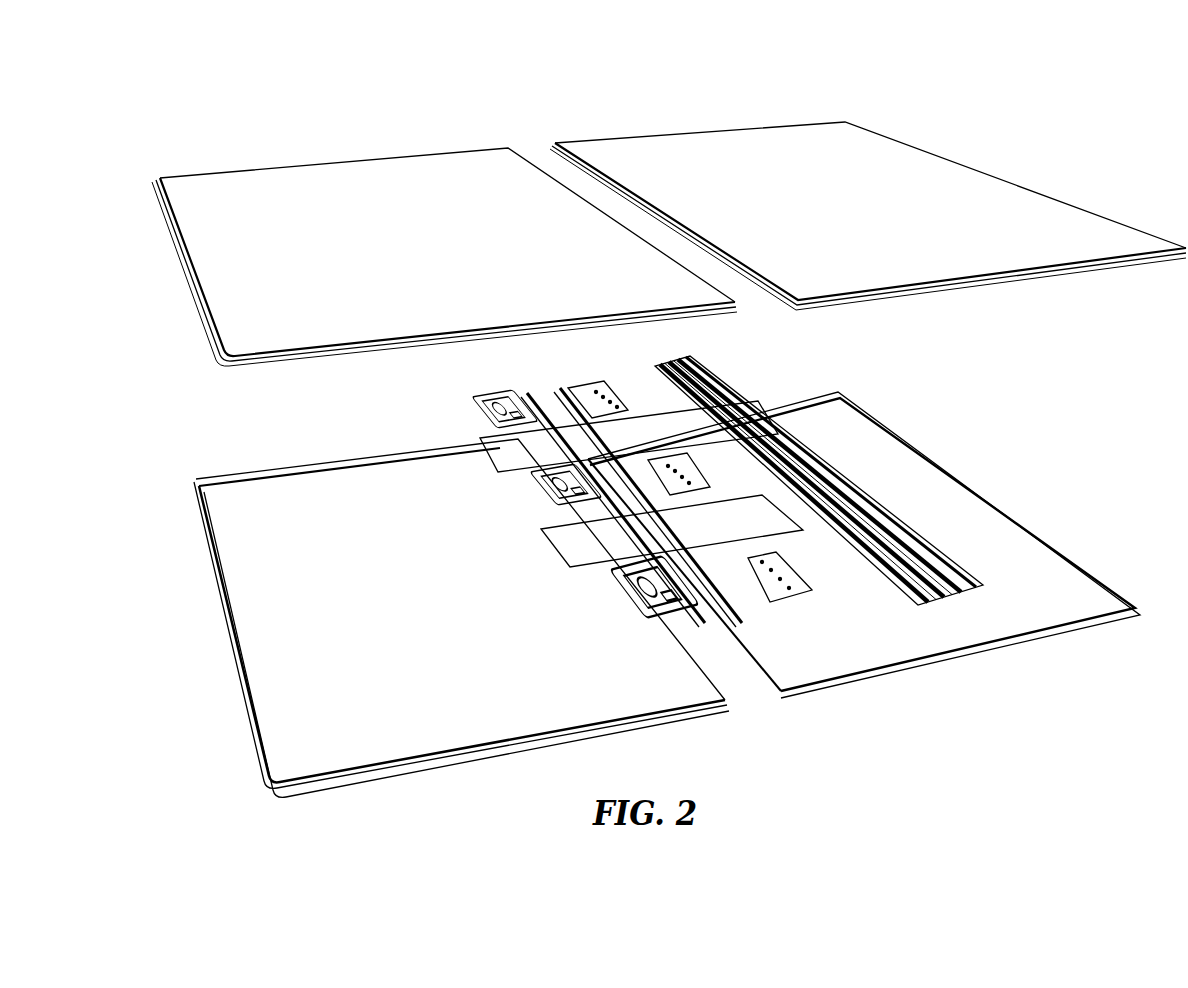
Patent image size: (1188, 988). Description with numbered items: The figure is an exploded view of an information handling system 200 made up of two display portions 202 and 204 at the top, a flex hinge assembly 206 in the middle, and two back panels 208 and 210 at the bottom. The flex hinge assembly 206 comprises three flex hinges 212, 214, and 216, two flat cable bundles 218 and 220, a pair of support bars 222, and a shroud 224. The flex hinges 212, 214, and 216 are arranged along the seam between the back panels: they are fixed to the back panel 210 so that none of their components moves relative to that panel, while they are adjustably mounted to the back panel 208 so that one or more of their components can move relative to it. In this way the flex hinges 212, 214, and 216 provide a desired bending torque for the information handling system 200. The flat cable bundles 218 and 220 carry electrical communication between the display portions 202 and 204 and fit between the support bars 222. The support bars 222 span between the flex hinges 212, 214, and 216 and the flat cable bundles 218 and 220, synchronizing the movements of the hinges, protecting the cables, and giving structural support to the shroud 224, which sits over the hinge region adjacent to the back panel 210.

The information handling system 200 is at (930, 85).
The display portion 202 is at (333, 165).
The display portion 204 is at (708, 135).
The flex hinge assembly 206 is at (468, 375).
The back panel 208 is at (560, 705).
The back panel 210 is at (840, 648).
The flex hinge 212 is at (450, 418).
The flex hinge 214 is at (520, 496).
The flex hinge 216 is at (602, 608).
The flat cable bundle 218 is at (470, 462).
The flat cable bundle 220 is at (530, 554).
The support bars 222 is at (558, 374).
The shroud 224 is at (708, 362).